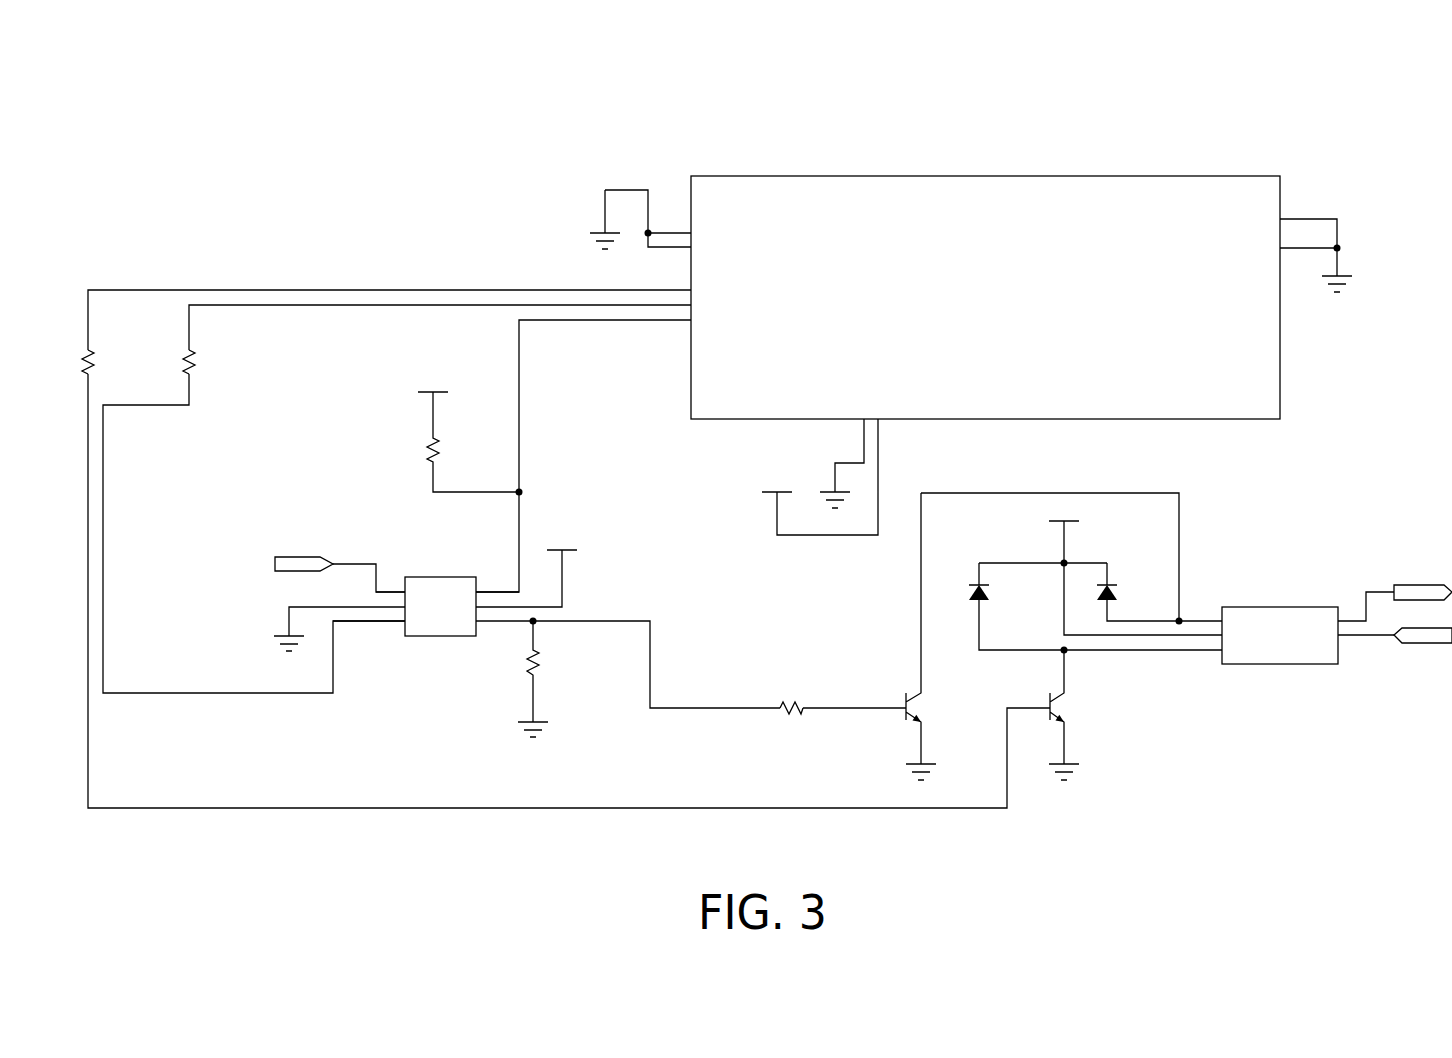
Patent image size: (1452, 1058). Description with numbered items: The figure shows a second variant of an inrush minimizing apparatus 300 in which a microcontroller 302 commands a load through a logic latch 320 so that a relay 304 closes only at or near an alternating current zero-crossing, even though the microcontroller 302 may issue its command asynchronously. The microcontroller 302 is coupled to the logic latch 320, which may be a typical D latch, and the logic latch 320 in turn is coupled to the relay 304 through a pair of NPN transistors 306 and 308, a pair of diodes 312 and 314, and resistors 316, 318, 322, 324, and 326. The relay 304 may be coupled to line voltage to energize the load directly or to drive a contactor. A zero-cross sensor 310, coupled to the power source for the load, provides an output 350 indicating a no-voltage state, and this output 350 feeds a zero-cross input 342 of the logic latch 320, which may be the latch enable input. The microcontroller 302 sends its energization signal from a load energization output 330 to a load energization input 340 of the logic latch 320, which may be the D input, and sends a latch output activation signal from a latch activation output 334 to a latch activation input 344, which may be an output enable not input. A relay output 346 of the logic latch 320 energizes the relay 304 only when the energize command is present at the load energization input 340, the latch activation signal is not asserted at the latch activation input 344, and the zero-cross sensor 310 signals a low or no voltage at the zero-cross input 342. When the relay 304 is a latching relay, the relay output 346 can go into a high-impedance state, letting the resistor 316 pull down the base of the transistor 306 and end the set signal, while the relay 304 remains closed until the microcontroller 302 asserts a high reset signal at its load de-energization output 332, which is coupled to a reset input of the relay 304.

The inrush minimizing apparatus 300 is at (1272, 73).
The microcontroller 302 is at (971, 272).
The relay 304 is at (1275, 667).
The NPN transistor 306 is at (903, 695).
The NPN transistor 308 is at (1045, 695).
The zero-cross sensor 310 is at (283, 557).
The diode 312 is at (978, 577).
The diode 314 is at (1117, 590).
The resistor 316 is at (91, 351).
The resistor 318 is at (191, 368).
The logic latch 320 is at (442, 637).
The resistor 322 is at (433, 447).
The resistor 324 is at (537, 672).
The resistor 326 is at (792, 717).
The load energization output 330 is at (693, 305).
The load de-energization output 332 is at (693, 289).
The latch activation output 334 is at (690, 320).
The load energization input 340 is at (400, 625).
The zero-cross input 342 is at (400, 585).
The latch activation input 344 is at (480, 585).
The relay output 346 is at (477, 625).
The output 350 is at (333, 560).